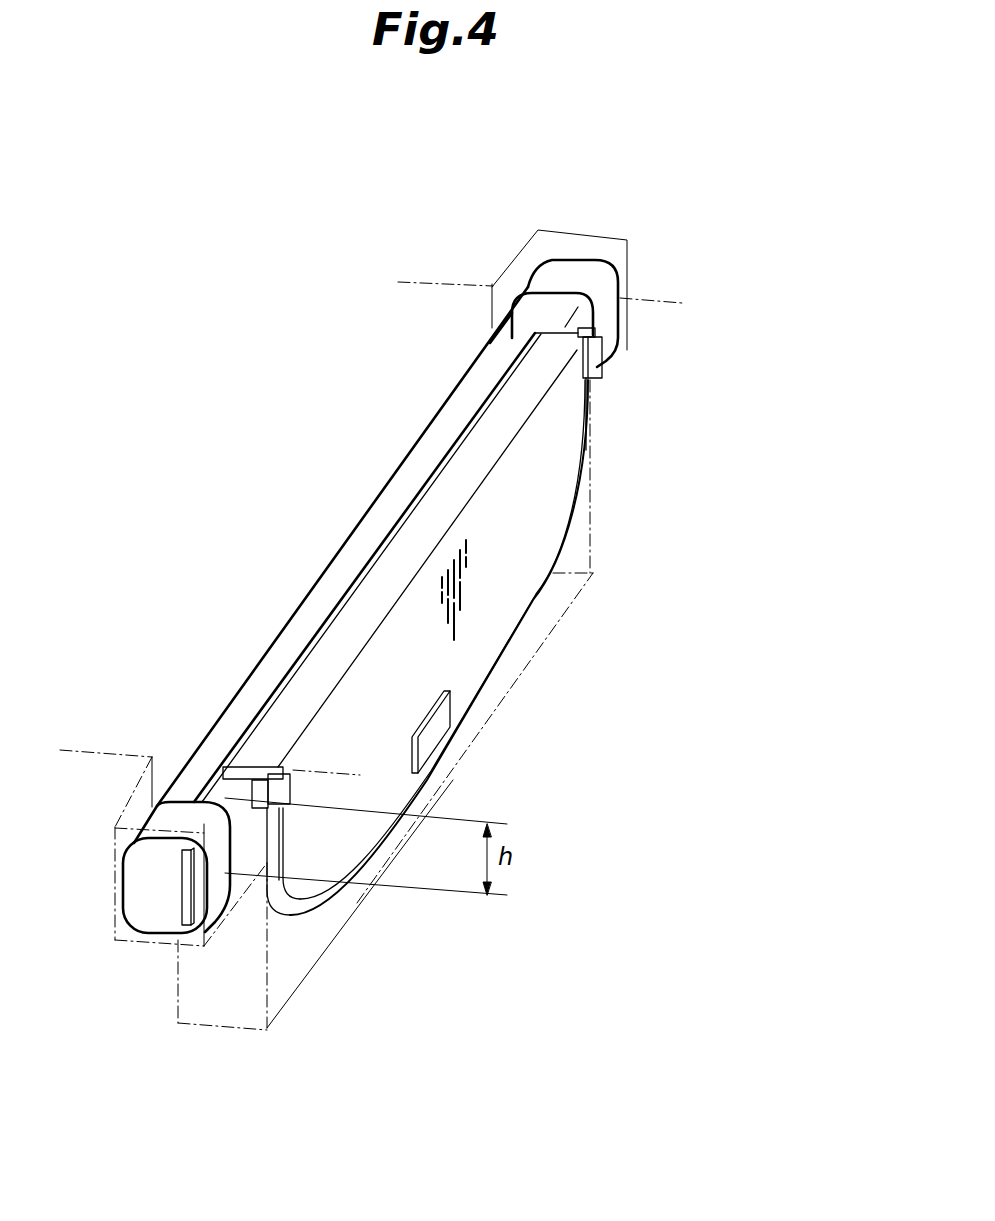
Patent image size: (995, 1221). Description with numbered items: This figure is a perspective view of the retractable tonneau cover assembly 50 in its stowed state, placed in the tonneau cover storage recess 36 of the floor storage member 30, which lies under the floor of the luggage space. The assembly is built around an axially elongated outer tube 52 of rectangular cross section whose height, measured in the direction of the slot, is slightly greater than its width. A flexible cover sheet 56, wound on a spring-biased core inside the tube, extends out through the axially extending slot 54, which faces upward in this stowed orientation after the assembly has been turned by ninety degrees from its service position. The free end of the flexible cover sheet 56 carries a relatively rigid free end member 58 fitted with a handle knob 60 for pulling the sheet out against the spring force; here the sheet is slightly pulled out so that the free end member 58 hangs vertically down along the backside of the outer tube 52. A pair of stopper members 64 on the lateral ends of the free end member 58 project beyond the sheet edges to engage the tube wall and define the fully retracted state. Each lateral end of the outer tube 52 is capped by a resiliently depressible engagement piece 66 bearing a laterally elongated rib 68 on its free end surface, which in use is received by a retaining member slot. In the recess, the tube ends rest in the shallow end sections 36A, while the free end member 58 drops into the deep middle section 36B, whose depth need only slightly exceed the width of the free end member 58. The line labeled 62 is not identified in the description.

The floor storage member 30 is at (126, 766).
The tonneau cover storage recess 36 is at (568, 555).
The shallow end section 36A is at (614, 359).
The deep middle section 36B is at (562, 597).
The retractable tonneau cover assembly 50 is at (386, 478).
The outer tube 52 is at (323, 577).
The slot 54 is at (455, 434).
The flexible cover sheet 56 is at (382, 563).
The free end member 58 is at (468, 667).
The handle knob 60 is at (432, 735).
The lower edge of case 62 is at (333, 687).
The stopper member 64 is at (592, 365).
The engagement piece 66 is at (577, 272).
The rib 68 is at (188, 913).